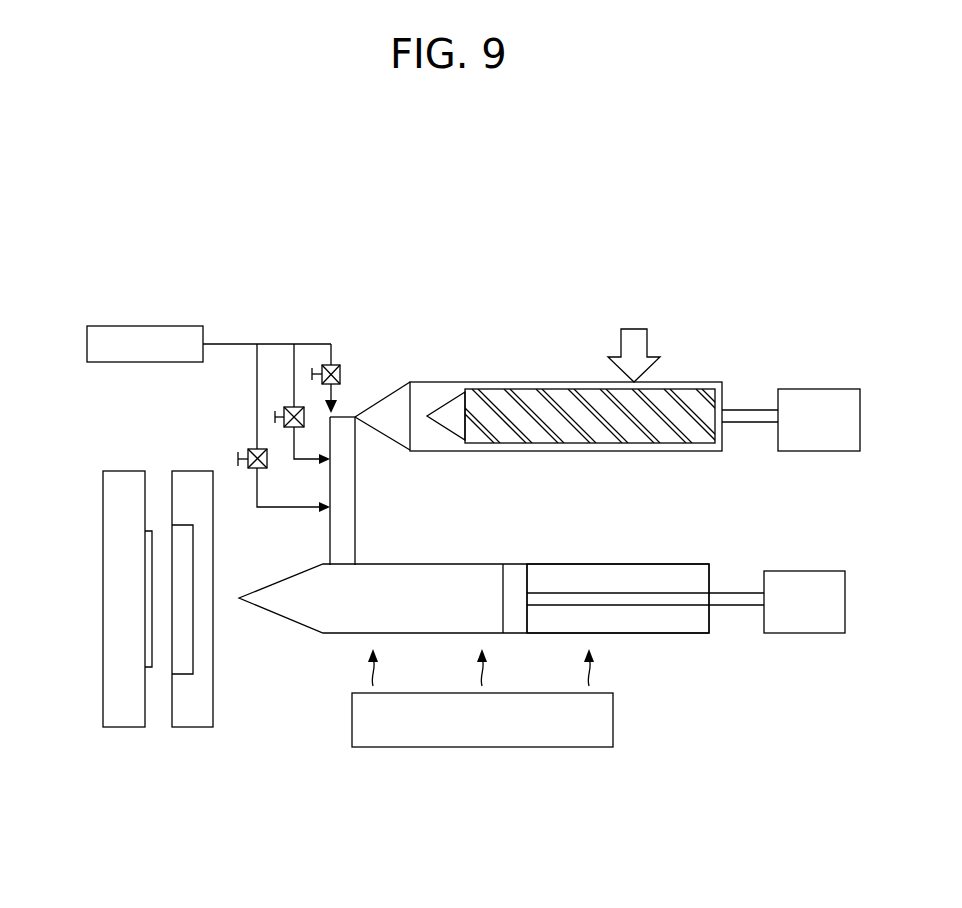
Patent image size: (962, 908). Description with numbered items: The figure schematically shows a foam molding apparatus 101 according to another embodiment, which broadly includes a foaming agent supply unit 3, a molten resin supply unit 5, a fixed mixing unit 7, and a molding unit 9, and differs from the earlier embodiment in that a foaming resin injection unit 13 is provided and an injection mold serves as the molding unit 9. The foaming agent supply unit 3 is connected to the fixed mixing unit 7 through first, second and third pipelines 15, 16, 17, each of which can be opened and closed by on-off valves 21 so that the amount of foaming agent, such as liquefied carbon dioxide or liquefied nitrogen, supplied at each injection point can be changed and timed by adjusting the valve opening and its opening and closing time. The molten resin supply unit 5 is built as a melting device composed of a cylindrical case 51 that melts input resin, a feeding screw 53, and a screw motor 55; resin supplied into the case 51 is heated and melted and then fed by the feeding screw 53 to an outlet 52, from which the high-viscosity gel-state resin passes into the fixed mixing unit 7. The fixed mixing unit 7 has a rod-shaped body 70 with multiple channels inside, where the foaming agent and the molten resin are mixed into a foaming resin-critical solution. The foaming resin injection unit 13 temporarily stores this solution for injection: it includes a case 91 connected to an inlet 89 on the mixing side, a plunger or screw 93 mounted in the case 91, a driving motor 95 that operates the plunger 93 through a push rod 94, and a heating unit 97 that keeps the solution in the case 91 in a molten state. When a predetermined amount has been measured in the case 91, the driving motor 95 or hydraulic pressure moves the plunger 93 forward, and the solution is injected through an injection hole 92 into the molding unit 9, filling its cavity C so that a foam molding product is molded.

The foam molding apparatus 101 is at (740, 222).
The foaming agent supply unit 3 is at (150, 326).
The first pipeline 15 is at (315, 342).
The second pipeline 16 is at (293, 365).
The third pipeline 17 is at (257, 378).
The on-off valves 21 is at (312, 375).
The outlet 52 is at (352, 413).
The fixed mixing unit 7 is at (362, 455).
The rod-shaped body 70 is at (343, 490).
The molten resin supply unit 5 is at (792, 328).
The cylindrical case 51 is at (497, 382).
The feeding screw 53 is at (675, 408).
The screw motor 55 is at (825, 408).
The foaming resin injection unit 13 is at (758, 663).
The inlet 89 is at (340, 567).
The injection hole 92 is at (239, 600).
The case 91 is at (680, 628).
The plunger or screw 93 is at (515, 579).
The push rod 94 is at (730, 590).
The driving motor 95 is at (815, 588).
The heating unit 97 is at (521, 748).
The molding unit 9 is at (78, 632).
The mold cavity C is at (180, 590).